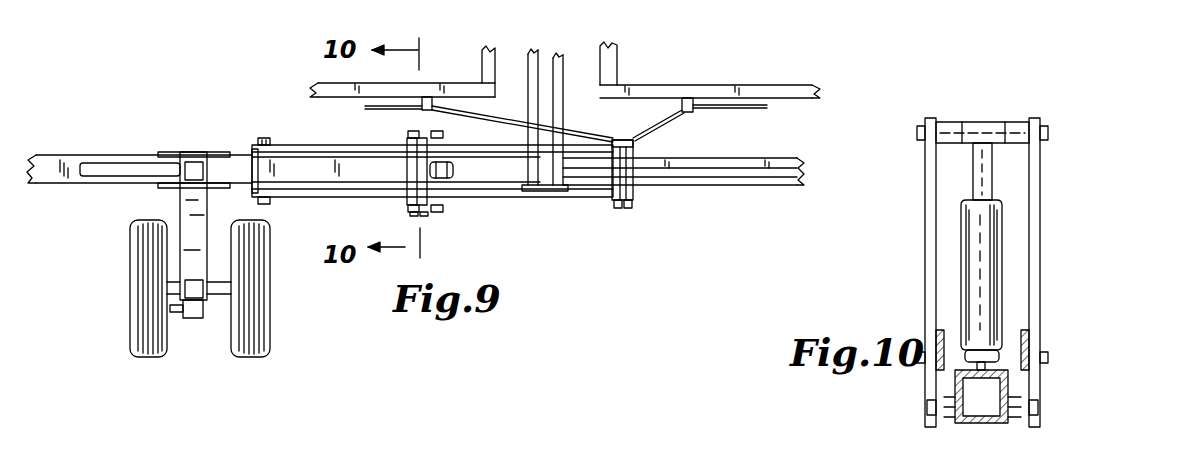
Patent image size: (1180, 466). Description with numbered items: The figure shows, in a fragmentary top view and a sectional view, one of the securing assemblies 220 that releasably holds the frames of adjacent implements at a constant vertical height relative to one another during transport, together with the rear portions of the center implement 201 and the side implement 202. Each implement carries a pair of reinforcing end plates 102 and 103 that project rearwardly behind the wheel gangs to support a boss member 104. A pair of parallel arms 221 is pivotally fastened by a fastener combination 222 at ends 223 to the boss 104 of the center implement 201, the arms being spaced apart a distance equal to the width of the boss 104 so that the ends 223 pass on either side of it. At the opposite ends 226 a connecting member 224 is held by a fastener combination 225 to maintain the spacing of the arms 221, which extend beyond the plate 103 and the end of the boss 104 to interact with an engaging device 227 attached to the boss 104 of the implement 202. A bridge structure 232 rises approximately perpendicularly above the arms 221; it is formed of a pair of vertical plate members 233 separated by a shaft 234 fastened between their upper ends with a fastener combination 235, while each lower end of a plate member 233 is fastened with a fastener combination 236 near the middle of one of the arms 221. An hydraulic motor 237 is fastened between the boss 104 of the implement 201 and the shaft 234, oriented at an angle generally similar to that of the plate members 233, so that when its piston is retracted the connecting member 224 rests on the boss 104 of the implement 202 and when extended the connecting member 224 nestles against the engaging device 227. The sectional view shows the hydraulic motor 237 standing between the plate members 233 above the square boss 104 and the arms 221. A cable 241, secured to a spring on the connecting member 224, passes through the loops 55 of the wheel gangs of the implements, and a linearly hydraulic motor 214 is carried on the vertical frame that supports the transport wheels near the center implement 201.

In FIG. 9, the loop 55 is at (432, 110).
In FIG. 9, the reinforcing end plate 102 is at (563, 92).
In FIG. 9, the reinforcing end plate 103 is at (528, 92).
In FIG. 10, the boss member 104 is at (976, 423).
In FIG. 9, the center implement 201 is at (470, 71).
In FIG. 9, the side implement 202 is at (665, 73).
In FIG. 9, the linearly hydraulic motor 214 is at (193, 318).
In FIG. 9, the securing assembly 220 is at (372, 214).
In FIG. 9, the parallel arms 221 is at (335, 146).
In FIG. 10, the parallel arms 221 is at (930, 392).
In FIG. 9, the fastener combination 222 is at (268, 130).
In FIG. 10, the fastener combination 222 is at (1040, 405).
In FIG. 9, the ends of arms 223 is at (252, 146).
In FIG. 9, the connecting member 224 is at (620, 182).
In FIG. 9, the fastener combination 225 is at (620, 208).
In FIG. 9, the ends of arms 226 is at (630, 200).
In FIG. 9, the engaging device 227 is at (703, 173).
In FIG. 10, the bridge structure 232 is at (1062, 220).
In FIG. 9, the vertical plate members 233 is at (445, 138).
In FIG. 10, the vertical plate members 233 is at (925, 262).
In FIG. 9, the shaft 234 is at (410, 150).
In FIG. 10, the shaft 234 is at (996, 122).
In FIG. 9, the fastener combination 235 is at (412, 212).
In FIG. 10, the fastener combination 235 is at (1048, 131).
In FIG. 9, the fastener combination 236 is at (437, 212).
In FIG. 10, the fastener combination 236 is at (922, 363).
In FIG. 9, the hydraulic motor 237 is at (441, 170).
In FIG. 10, the hydraulic motor 237 is at (1000, 313).
In FIG. 9, the cable 241 is at (573, 131).